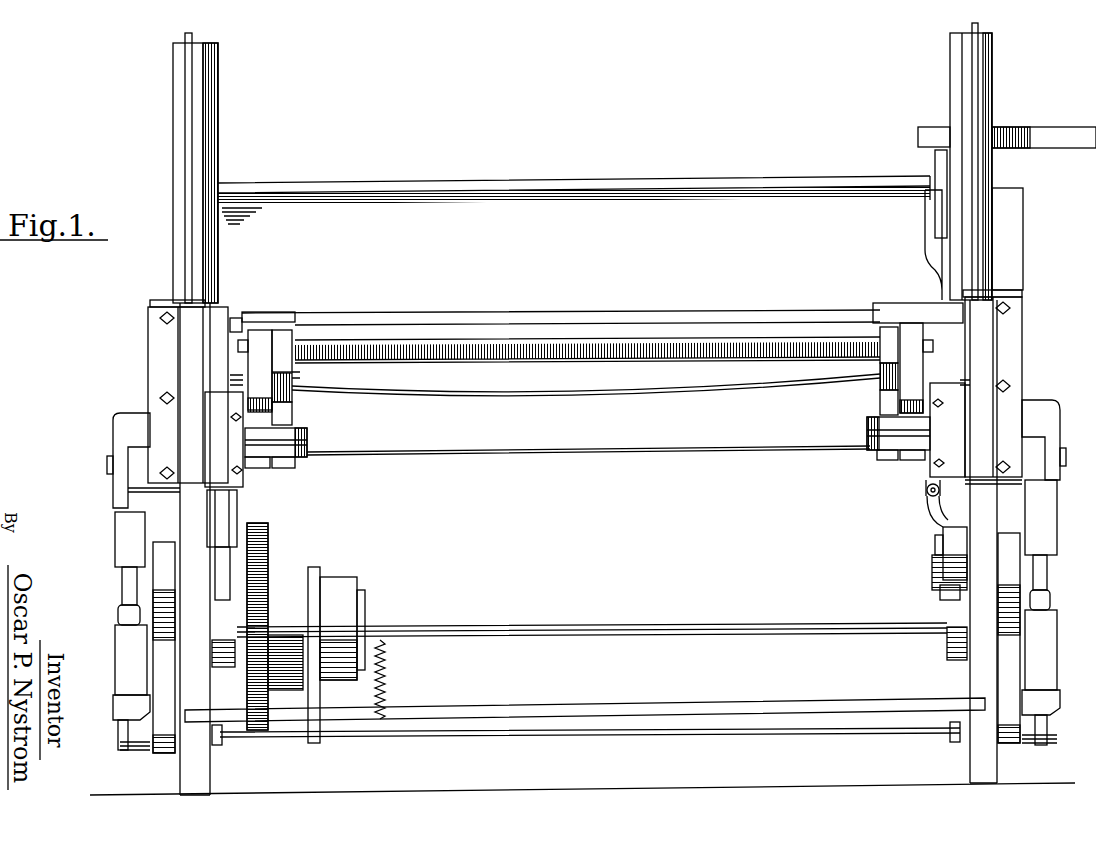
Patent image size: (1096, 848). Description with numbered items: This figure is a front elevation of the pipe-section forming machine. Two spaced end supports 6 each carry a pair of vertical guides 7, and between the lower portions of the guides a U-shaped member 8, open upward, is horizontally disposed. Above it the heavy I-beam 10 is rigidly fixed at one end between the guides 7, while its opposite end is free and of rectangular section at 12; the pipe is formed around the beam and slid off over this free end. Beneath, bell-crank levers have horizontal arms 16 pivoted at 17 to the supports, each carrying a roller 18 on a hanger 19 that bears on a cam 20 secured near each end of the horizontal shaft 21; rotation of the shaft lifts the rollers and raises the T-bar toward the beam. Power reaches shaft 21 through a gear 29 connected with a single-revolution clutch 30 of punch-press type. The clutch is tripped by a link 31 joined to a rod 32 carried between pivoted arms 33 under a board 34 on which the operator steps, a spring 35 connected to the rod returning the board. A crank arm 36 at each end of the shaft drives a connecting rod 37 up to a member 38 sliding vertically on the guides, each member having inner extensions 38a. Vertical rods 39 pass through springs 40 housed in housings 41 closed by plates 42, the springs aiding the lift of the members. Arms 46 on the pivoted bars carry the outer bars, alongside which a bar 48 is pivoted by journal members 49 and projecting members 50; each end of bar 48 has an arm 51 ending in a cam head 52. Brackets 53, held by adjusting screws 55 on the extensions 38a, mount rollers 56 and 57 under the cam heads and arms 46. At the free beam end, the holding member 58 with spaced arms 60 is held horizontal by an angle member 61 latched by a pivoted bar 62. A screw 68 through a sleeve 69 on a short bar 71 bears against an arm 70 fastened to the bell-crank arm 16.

The end supports 6 is at (180, 510).
The guides 7 is at (182, 228).
The U-shaped member 8 is at (566, 440).
The I-beam 10 is at (590, 196).
The free end of the beam 12 is at (1013, 210).
The horizontal arms of bell-crank levers 16 is at (232, 506).
The pivot 17 is at (935, 542).
The roller 18 is at (222, 566).
The hanger 19 is at (266, 536).
The cams 20 is at (225, 667).
The shaft 21 is at (632, 618).
The gear 29 is at (270, 566).
The clutch 30 is at (306, 607).
The link 31 is at (320, 700).
The rod 32 is at (436, 734).
The arms 33 is at (222, 742).
The board 34 is at (542, 712).
The spring 35 is at (380, 694).
The crank arm 36 is at (165, 636).
The connecting rod 37 is at (125, 606).
The member 38 is at (160, 440).
The extension 38a is at (200, 378).
The rods 39 is at (190, 158).
The spring 40 is at (125, 491).
The housing 41 is at (190, 352).
The plates 42 is at (165, 302).
The arms 46 is at (284, 392).
The bar 48 is at (634, 340).
The journal member 49 is at (285, 338).
The projecting member 50 is at (262, 345).
The arm 51 is at (285, 376).
The cam head 52 is at (284, 412).
The bracket 53 is at (300, 446).
The adjusting screws 55 is at (236, 468).
The roller 56 is at (290, 462).
The roller 57 is at (254, 468).
The holding member 58 is at (932, 134).
The arms 60 is at (1045, 132).
The angle member 61 is at (935, 159).
The bar 62 is at (932, 237).
The screw 68 is at (929, 498).
The sleeve 69 is at (940, 492).
The arm 70 is at (937, 512).
The short bar 71 is at (930, 495).